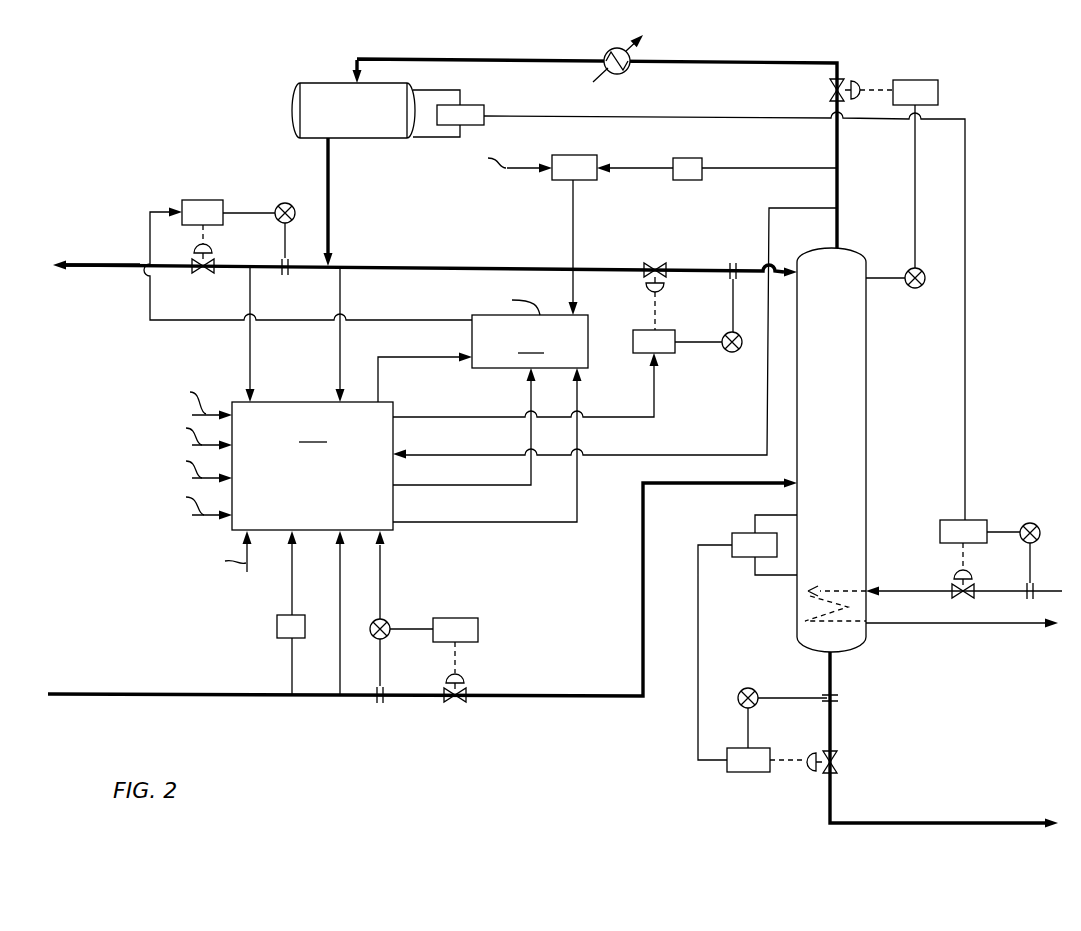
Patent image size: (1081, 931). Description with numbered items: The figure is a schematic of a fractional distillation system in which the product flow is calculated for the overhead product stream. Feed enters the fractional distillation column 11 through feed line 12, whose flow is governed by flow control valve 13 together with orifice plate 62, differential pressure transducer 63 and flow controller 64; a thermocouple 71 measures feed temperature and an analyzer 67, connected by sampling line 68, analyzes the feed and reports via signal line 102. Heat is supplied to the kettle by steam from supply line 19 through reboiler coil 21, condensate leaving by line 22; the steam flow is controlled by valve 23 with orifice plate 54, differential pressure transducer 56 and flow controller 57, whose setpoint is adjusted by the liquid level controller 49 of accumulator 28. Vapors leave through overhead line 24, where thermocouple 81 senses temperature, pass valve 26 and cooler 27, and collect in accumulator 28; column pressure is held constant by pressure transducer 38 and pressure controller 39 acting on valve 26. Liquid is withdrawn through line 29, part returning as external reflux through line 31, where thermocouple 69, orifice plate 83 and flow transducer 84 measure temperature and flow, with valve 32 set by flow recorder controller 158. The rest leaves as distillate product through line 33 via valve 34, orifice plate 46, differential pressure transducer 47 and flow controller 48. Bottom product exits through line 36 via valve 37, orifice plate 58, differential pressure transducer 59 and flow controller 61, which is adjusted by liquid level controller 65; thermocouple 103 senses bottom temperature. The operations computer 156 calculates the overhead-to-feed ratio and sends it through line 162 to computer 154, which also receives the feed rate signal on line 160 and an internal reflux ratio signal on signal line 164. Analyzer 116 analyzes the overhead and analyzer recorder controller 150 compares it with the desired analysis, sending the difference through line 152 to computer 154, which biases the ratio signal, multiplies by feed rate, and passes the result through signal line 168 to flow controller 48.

The fractional distillation column 11 is at (842, 322).
The feed line 12 is at (118, 692).
The flow control valve 13 is at (466, 681).
The supply line 19 is at (900, 590).
The reboiler coil 21 is at (816, 580).
The line 22 is at (938, 625).
The valve 23 is at (955, 577).
The overhead line 24 is at (505, 59).
The valve 26 is at (864, 84).
The cooler 27 is at (634, 51).
The accumulator 28 is at (365, 121).
The line 29 is at (338, 185).
The line 31 is at (476, 265).
The valve 32 is at (660, 292).
The line 33 is at (122, 262).
The valve 34 is at (194, 254).
The line 36 is at (918, 820).
The valve 37 is at (812, 750).
The pressure transducer 38 is at (905, 270).
The pressure controller 39 is at (940, 92).
The orifice plate 46 is at (280, 260).
The differential pressure transducer 47 is at (286, 200).
The flow controller 48 is at (198, 198).
The liquid level controller 49 is at (482, 104).
The orifice plate 54 is at (1026, 600).
The differential pressure transducer 56 is at (1020, 524).
The flow controller 57 is at (944, 520).
The orifice plate 58 is at (838, 701).
The differential pressure transducer 59 is at (742, 688).
The flow controller 61 is at (740, 748).
The orifice plate 62 is at (382, 704).
The differential pressure transducer 63 is at (386, 616).
The flow controller 64 is at (458, 618).
The liquid level controller 65 is at (745, 558).
The analyzer 67 is at (276, 623).
The sampling line 68 is at (288, 655).
The thermocouple 69 is at (343, 284).
The thermocouple 71 is at (336, 687).
The thermocouple 81 is at (835, 213).
The orifice plate 83 is at (728, 264).
The flow transducer 84 is at (736, 352).
The signal line 102 is at (294, 590).
The thermocouple 103 is at (248, 284).
The analyzer 116 is at (688, 158).
The analyzer recorder controller 150 is at (568, 155).
The line 152 is at (575, 222).
The computer 154 is at (495, 323).
The operations computer 156 is at (275, 478).
The flow recorder controller 158 is at (676, 356).
The line 160 is at (582, 400).
The line 162 is at (525, 398).
The signal line 164 is at (395, 356).
The signal line 168 is at (150, 294).